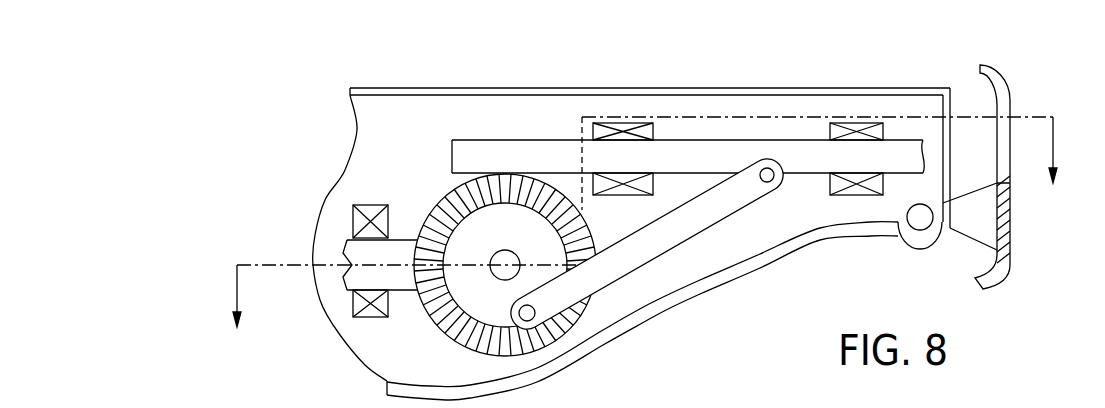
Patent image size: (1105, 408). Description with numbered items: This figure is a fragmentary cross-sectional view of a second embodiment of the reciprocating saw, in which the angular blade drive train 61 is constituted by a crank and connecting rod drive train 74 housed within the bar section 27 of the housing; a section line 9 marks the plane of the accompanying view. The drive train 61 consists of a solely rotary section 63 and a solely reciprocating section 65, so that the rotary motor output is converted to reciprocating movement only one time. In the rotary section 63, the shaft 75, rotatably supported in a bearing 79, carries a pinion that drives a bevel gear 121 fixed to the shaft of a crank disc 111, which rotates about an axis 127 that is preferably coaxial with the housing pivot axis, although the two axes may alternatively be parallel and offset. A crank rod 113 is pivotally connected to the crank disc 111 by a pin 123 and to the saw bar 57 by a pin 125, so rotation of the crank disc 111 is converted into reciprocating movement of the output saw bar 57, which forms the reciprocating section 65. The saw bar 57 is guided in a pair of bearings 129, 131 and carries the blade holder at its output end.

The section line 9— 9 is at (643, 222).
The bar section 27 is at (798, 92).
The saw bar 57 is at (518, 150).
The angular blade drive train 61 is at (346, 65).
The rotary section 63 is at (392, 195).
The reciprocating section 65 is at (688, 120).
The crank and connecting rod drive train 74 is at (443, 52).
The shaft 75 is at (353, 275).
The bearing 79 is at (368, 318).
The crank disc 111 is at (465, 307).
The crank rod 113 is at (622, 272).
The bevel gear 121 is at (452, 192).
The pin 123 is at (531, 323).
The pin 125 is at (770, 185).
The axis 127 is at (510, 258).
The bearing 129 is at (618, 128).
The bearing 131 is at (875, 128).